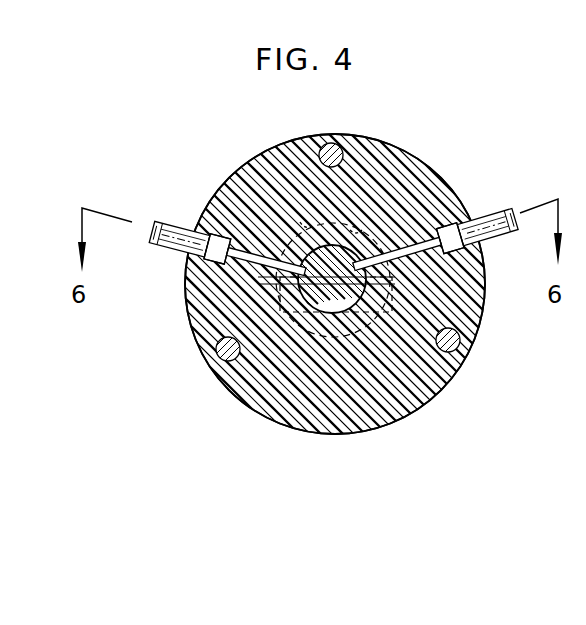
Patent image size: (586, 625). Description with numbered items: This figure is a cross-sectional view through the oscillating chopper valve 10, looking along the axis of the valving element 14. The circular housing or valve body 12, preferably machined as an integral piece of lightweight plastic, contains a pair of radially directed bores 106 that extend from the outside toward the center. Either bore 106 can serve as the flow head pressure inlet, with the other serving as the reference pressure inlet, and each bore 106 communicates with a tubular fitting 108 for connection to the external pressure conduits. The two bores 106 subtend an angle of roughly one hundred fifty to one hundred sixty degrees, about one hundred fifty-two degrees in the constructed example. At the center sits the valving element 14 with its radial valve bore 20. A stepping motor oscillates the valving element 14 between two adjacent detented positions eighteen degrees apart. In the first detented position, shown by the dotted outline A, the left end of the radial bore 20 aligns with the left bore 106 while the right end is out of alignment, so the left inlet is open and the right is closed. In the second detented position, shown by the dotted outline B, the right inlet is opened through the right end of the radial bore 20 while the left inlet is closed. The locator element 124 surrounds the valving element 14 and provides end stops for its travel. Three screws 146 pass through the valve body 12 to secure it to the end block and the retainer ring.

The oscillating chopper valve 10 is at (397, 123).
The valve body 12 is at (453, 186).
The valving element 14 is at (348, 318).
The radial valve bore 20 is at (322, 263).
The radially directed bores 106 is at (225, 195).
The tubular fitting 108 is at (173, 252).
The locator element 124 is at (270, 167).
The screws 146 is at (331, 143).
The first detented position outline A is at (308, 224).
The second detented position outline B is at (355, 228).